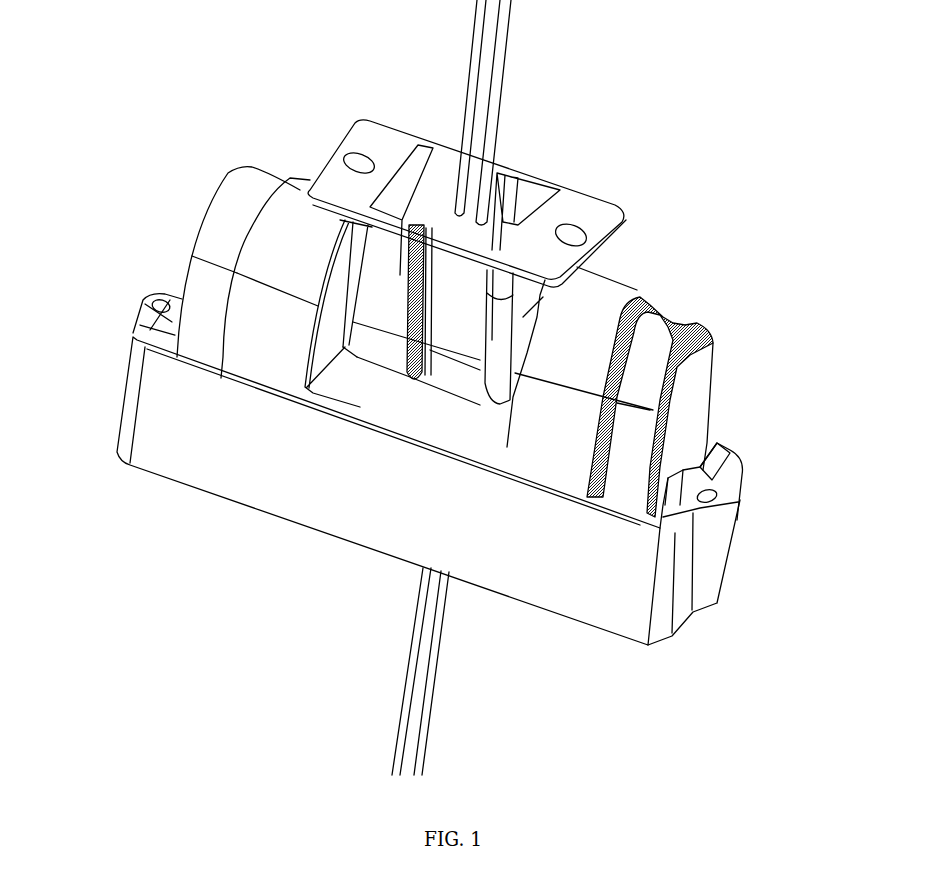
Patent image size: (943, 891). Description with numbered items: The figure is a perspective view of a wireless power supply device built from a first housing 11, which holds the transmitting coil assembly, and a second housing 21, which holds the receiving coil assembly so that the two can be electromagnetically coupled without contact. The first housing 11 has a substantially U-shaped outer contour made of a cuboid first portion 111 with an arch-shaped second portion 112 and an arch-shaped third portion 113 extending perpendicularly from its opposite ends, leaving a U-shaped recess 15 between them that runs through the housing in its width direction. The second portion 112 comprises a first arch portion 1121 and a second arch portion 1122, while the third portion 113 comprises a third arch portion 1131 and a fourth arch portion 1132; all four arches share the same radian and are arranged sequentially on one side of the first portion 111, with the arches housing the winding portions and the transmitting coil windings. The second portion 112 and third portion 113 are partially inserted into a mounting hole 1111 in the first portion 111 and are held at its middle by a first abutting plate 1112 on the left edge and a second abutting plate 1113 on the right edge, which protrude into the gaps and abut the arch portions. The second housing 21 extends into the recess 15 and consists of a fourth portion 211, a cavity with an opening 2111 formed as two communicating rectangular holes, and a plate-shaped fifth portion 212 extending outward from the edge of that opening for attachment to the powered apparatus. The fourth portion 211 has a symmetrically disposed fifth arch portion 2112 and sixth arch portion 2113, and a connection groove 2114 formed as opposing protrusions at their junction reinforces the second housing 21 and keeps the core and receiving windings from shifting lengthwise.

The first housing 11 is at (703, 587).
The first portion 111 is at (155, 437).
The second portion 112 is at (148, 347).
The first arch portion 1121 is at (212, 260).
The second arch portion 1122 is at (250, 350).
The first abutting plate 1112 is at (158, 300).
The third portion 113 is at (675, 410).
The third arch portion 1131 is at (600, 320).
The fourth arch portion 1132 is at (650, 353).
The second abutting plate 1113 is at (703, 445).
The mounting hole 1111 is at (702, 499).
The recess 15 is at (335, 327).
The fifth arch portion 2112 is at (356, 252).
The connection groove 2114 is at (415, 215).
The second housing 21 is at (572, 200).
The fourth portion 211 is at (398, 273).
The fifth portion 212 is at (335, 173).
The sixth arch portion 2113 is at (595, 323).
The opening 2111 is at (518, 225).